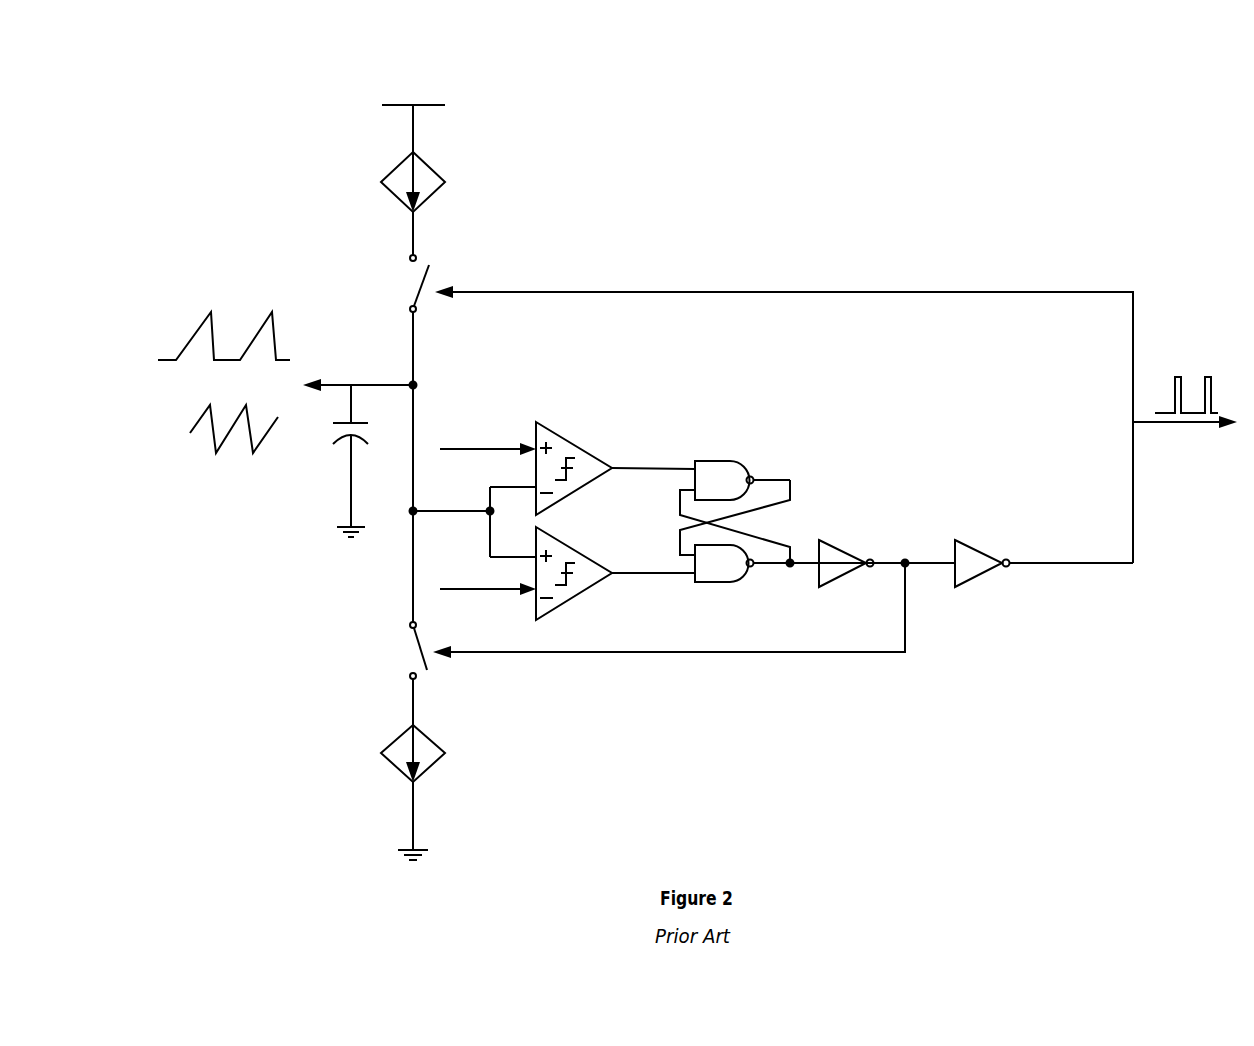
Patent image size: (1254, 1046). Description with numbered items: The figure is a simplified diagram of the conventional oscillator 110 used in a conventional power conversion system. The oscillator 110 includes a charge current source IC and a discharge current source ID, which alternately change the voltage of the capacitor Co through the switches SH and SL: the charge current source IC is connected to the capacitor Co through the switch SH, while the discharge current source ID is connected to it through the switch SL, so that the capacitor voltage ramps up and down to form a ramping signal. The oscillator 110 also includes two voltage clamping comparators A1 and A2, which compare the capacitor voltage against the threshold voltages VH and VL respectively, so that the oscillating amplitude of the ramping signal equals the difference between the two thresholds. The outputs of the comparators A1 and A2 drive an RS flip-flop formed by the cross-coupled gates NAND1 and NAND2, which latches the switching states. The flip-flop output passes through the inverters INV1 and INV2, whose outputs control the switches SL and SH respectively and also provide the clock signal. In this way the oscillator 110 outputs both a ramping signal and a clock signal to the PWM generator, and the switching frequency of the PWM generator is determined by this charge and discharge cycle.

The oscillator 110 is at (222, 152).
The charge current source IC is at (391, 180).
The high-side switch SH is at (400, 283).
The low-side switch SL is at (402, 650).
The discharge current source ID is at (396, 769).
The capacitor Co is at (335, 461).
The voltage clamping comparator A1 is at (574, 460).
The voltage clamping comparator A2 is at (574, 576).
The NAND gate NAND1 is at (738, 464).
The NAND gate NAND2 is at (738, 581).
The inverter INV1 is at (846, 550).
The inverter INV2 is at (982, 550).